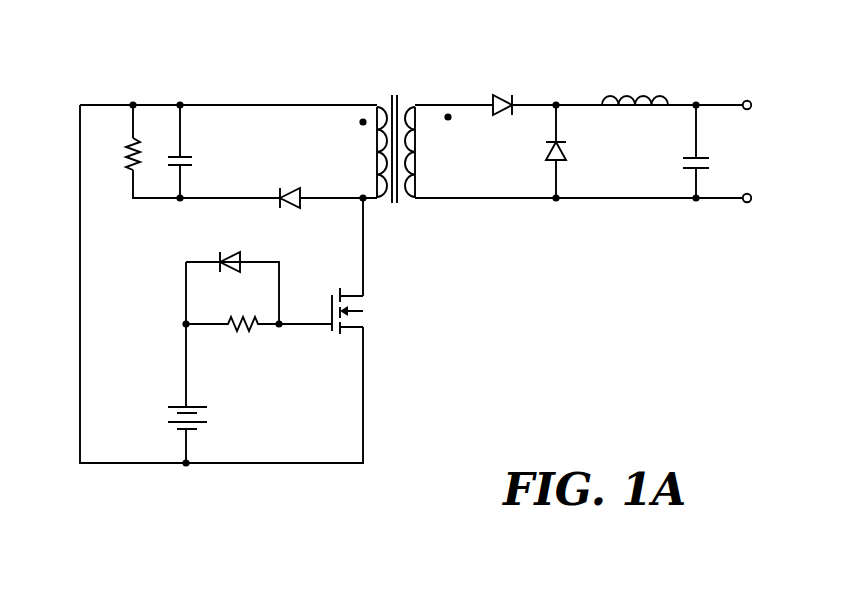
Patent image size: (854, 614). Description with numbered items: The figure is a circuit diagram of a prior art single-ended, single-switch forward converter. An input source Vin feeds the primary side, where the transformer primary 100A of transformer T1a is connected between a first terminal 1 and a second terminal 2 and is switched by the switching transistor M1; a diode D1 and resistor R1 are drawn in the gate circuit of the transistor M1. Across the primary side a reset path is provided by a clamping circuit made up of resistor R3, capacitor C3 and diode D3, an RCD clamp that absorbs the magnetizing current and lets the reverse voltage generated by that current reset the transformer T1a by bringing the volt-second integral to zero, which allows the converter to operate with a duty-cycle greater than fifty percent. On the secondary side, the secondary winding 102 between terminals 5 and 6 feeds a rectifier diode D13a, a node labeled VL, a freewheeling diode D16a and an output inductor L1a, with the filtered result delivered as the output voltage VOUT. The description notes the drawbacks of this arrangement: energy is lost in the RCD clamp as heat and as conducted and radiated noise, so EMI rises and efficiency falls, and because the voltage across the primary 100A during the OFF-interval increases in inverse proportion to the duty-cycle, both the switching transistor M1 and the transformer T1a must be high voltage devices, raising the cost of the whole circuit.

The resistor R3 is at (116, 155).
The capacitor C3 is at (198, 171).
The diode D3 is at (296, 215).
The transformer T1a is at (378, 110).
The transformer primary 100A is at (351, 153).
The secondary winding 102 is at (418, 153).
The primary winding terminal 1 is at (324, 125).
The primary winding terminal 2 is at (344, 185).
The secondary winding terminal 5 is at (436, 129).
The secondary winding terminal 6 is at (436, 183).
The rectifier diode D13a is at (496, 92).
The inductor voltage node VL is at (536, 103).
The freewheeling diode D16a is at (590, 170).
The output inductor L1a is at (635, 117).
The output voltage / output capacitor VOUT is at (731, 159).
The gate diode D1 is at (232, 274).
The gate resistor R1 is at (259, 309).
The switching transistor M1 is at (371, 311).
The input voltage source Vin is at (167, 393).